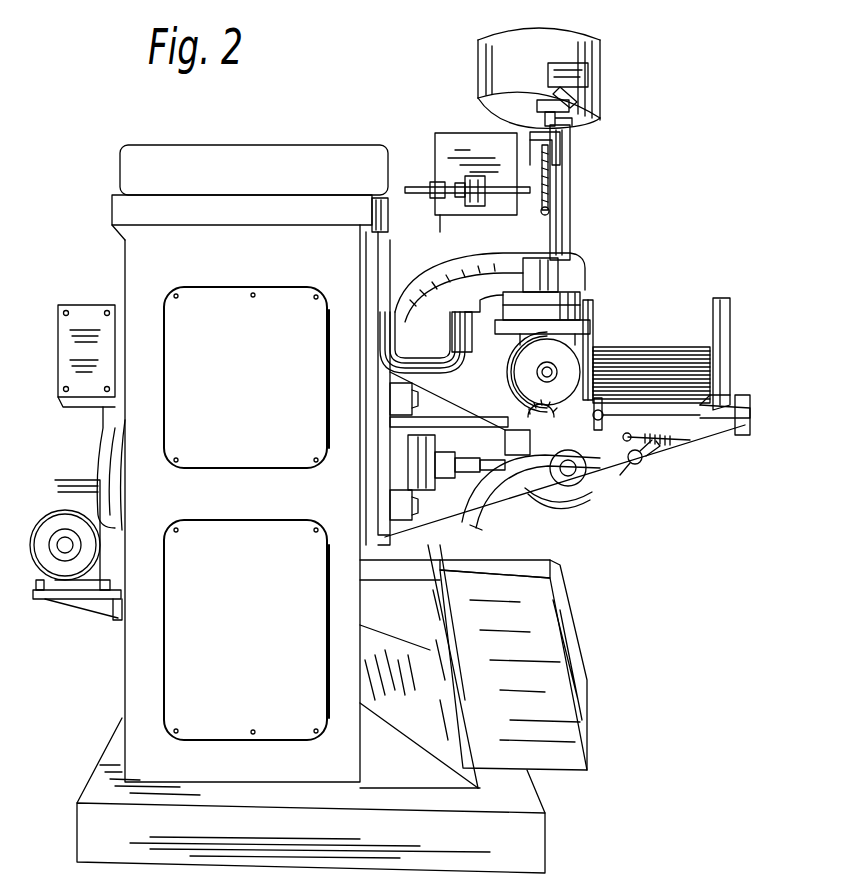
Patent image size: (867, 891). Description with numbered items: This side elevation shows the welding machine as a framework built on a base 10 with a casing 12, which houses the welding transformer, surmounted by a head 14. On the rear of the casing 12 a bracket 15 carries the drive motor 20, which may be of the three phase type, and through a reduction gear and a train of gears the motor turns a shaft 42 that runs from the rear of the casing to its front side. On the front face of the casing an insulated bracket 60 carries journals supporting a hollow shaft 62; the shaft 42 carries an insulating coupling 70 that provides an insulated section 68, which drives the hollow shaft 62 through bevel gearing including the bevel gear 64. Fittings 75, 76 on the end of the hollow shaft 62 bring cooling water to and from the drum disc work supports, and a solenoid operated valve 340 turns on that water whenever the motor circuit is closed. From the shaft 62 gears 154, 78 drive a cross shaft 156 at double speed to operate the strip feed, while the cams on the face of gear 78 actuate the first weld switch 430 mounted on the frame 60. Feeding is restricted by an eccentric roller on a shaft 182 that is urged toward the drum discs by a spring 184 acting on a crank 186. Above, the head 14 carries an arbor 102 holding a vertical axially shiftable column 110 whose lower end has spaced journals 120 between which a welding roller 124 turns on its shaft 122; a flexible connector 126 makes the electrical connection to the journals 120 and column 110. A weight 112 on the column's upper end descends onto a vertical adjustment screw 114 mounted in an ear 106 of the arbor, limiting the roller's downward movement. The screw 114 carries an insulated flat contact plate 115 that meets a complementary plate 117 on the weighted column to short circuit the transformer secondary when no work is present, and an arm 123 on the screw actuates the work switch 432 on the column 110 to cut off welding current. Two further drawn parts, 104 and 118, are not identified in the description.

The base 10 is at (112, 775).
The casing 12 is at (125, 258).
The head 14 is at (138, 160).
The bracket 15 is at (108, 602).
The drive motor 20 is at (46, 520).
The shaft 42 is at (408, 462).
The bracket 60 is at (400, 422).
The hollow shaft 62 is at (615, 478).
The bevel gear 64 is at (560, 488).
The insulated section 68 is at (455, 480).
The insulating coupling 70 is at (455, 470).
The fitting 75 is at (486, 528).
The fitting 76 is at (468, 525).
The gear 78 is at (575, 500).
The arbor 102 is at (421, 160).
The column post 104 is at (572, 218).
The ear 106 is at (570, 148).
The column 110 is at (560, 272).
The weight 112 is at (590, 55).
The vertical adjustment screw 114 is at (549, 175).
The flat contact plate 115 is at (535, 108).
The complementary plate 117 is at (540, 97).
The housing 118 is at (580, 300).
The journals 120 is at (560, 343).
The shaft 122 is at (545, 372).
The arm 123 is at (527, 127).
The welding roller 124 is at (510, 392).
The flexible connector 126 is at (440, 362).
The gear 154 is at (530, 415).
The cross shaft 156 is at (600, 419).
The shaft 182 is at (643, 463).
The spring 184 is at (640, 450).
The crank 186 is at (650, 456).
The solenoid operated valve 340 is at (486, 206).
The first weld switch 430 is at (505, 440).
The work switch 432 is at (592, 73).